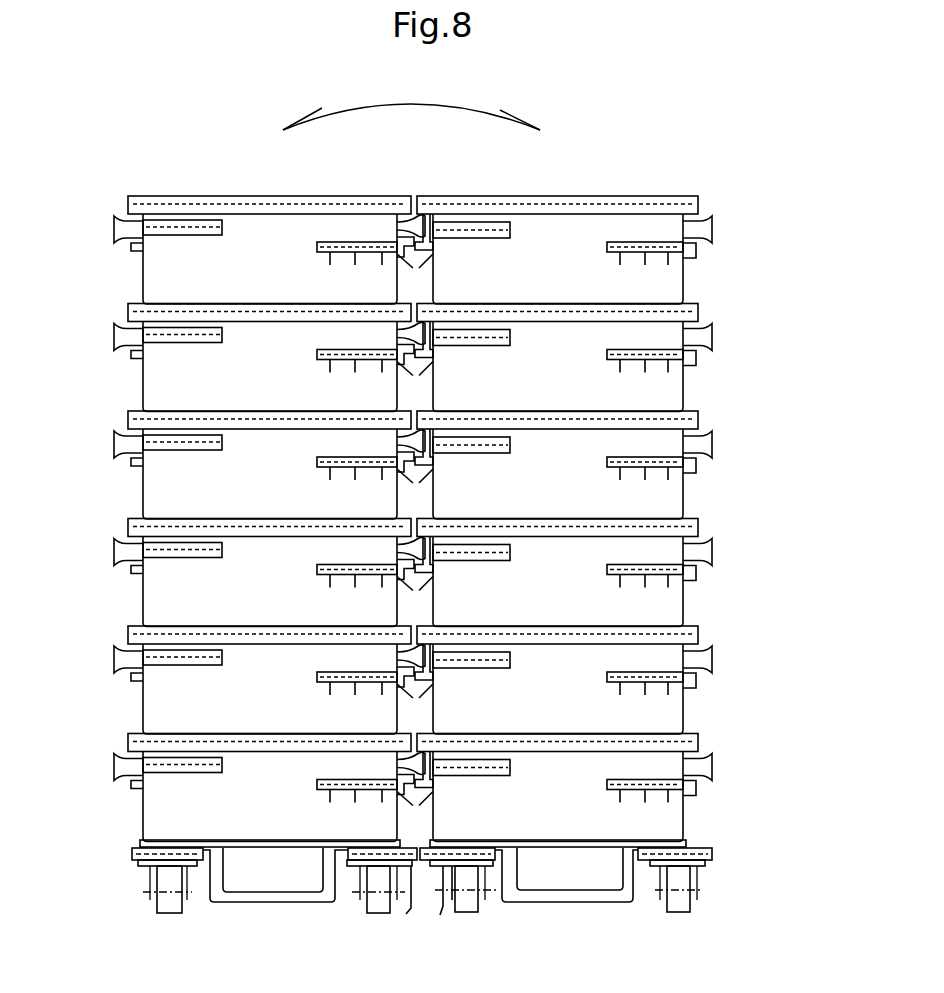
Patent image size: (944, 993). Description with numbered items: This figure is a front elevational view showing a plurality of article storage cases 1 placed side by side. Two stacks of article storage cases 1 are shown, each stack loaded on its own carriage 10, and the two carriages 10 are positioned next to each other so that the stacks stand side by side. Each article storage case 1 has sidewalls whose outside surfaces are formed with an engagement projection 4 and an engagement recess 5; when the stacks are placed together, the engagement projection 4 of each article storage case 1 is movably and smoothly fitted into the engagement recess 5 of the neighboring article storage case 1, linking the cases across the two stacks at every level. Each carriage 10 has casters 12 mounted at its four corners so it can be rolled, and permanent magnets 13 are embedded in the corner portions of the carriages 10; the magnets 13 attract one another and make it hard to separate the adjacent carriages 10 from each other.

The article storage case 1 is at (160, 270).
The engagement projection 4 is at (407, 234).
The engagement recess 5 is at (428, 228).
The carriage 10 is at (263, 893).
The caster 12 is at (162, 898).
The permanent magnet 13 is at (410, 913).